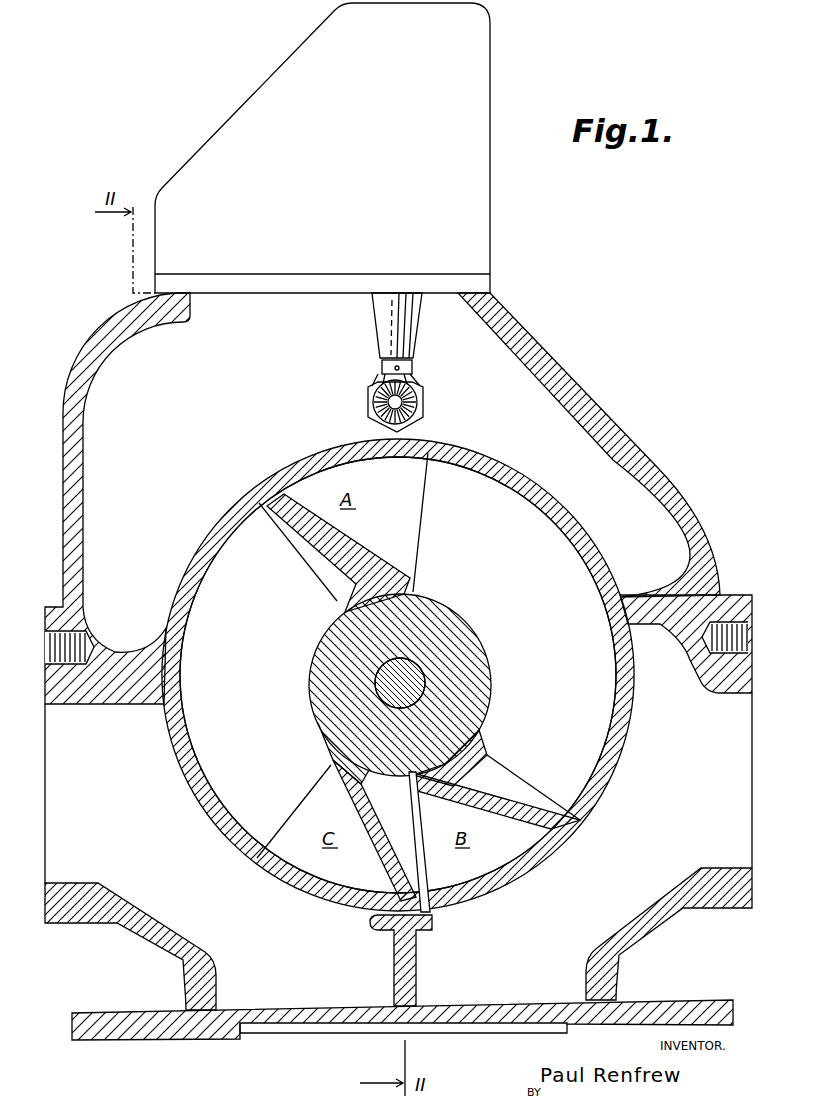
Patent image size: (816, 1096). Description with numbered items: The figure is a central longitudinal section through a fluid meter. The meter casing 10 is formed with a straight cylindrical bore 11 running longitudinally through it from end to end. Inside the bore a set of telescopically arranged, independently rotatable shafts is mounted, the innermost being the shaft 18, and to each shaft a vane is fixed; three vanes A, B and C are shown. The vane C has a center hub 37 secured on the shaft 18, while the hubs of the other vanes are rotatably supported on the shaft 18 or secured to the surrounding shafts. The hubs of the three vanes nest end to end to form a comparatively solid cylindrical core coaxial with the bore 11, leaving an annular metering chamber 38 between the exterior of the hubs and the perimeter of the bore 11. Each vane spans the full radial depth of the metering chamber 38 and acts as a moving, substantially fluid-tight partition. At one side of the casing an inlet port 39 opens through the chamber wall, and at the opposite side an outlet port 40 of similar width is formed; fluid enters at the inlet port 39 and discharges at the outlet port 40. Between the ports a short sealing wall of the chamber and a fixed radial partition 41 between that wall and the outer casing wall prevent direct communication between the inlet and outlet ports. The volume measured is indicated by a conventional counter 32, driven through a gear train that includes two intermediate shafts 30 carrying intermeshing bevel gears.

The meter casing 10 is at (660, 463).
The cylindrical bore 11 is at (205, 560).
The shaft 18 is at (385, 685).
The intermediate shafts 30 is at (418, 402).
The counter 32 is at (477, 73).
The center hub 37 is at (473, 647).
The metering chamber 38 is at (558, 532).
The inlet port 39 is at (690, 779).
The outlet port 40 is at (123, 819).
The fixed radial partition 41 is at (416, 967).